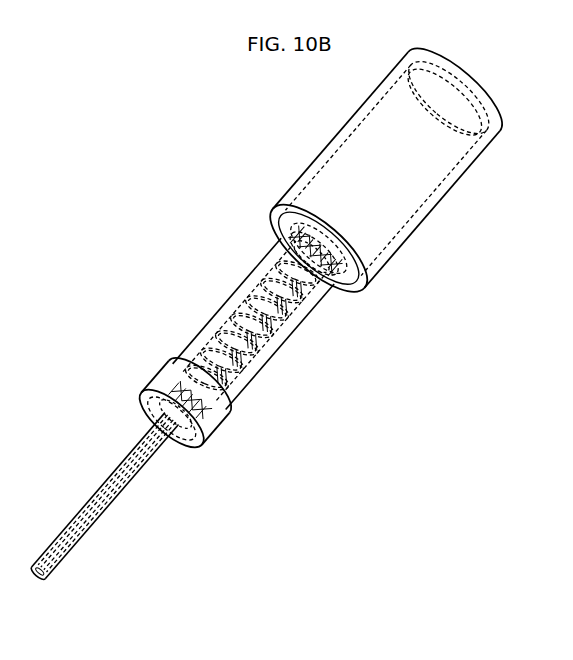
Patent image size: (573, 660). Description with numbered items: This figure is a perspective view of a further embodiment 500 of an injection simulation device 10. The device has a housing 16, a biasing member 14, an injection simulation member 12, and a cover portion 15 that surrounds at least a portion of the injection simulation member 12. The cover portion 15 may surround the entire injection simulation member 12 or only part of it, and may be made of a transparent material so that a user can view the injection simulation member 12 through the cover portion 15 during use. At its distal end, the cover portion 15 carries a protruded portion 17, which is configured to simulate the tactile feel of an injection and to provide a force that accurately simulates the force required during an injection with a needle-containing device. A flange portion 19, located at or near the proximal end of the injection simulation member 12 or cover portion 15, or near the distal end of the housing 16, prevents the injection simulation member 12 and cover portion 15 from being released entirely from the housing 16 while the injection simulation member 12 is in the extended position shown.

The further embodiment of an injection simulation device 500 is at (330, 110).
The injection simulation device 10 is at (437, 190).
The housing 16 is at (302, 190).
The biasing member 14 is at (263, 332).
The flange portion 19 is at (197, 412).
The cover portion 15 is at (152, 463).
The injection simulation member 12 is at (93, 517).
The protruded portion 17 is at (45, 582).